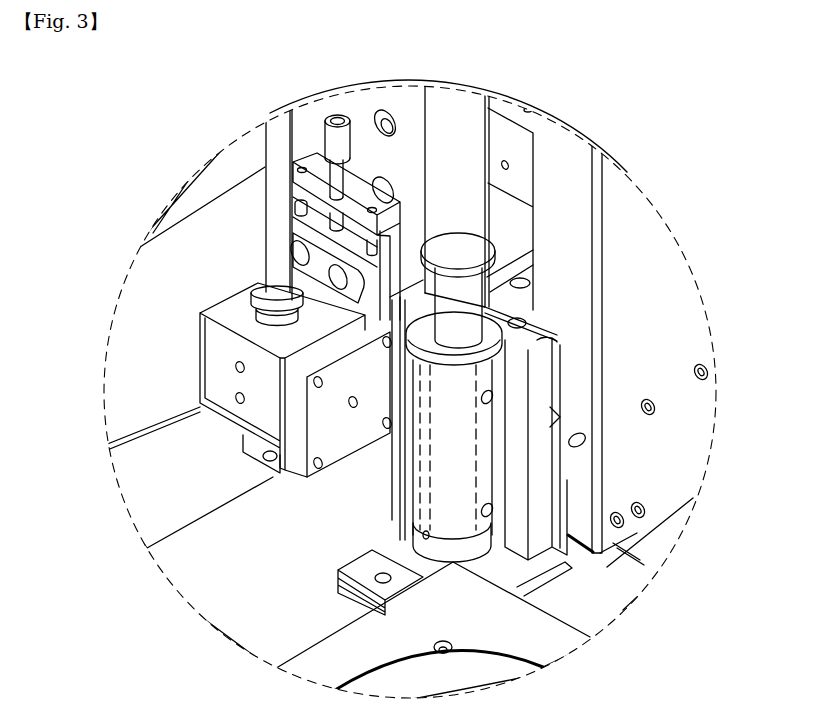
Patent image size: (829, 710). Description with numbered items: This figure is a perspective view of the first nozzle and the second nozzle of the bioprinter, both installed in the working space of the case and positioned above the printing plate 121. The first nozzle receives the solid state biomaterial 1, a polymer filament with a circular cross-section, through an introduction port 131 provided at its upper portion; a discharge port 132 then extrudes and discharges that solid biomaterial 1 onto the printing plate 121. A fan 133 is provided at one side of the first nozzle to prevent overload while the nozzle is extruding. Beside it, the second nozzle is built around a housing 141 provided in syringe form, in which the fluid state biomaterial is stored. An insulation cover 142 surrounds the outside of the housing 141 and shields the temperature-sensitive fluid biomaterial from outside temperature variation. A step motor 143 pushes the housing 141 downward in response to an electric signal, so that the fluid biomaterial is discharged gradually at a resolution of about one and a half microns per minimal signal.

The solid state biomaterial 1 is at (266, 145).
The printing plate 121 is at (320, 660).
The introduction port 131 is at (258, 283).
The discharge port 132 is at (242, 445).
The fan 133 is at (327, 423).
The housing 141 is at (440, 453).
The insulation cover 142 is at (480, 530).
The step motor 143 is at (563, 229).